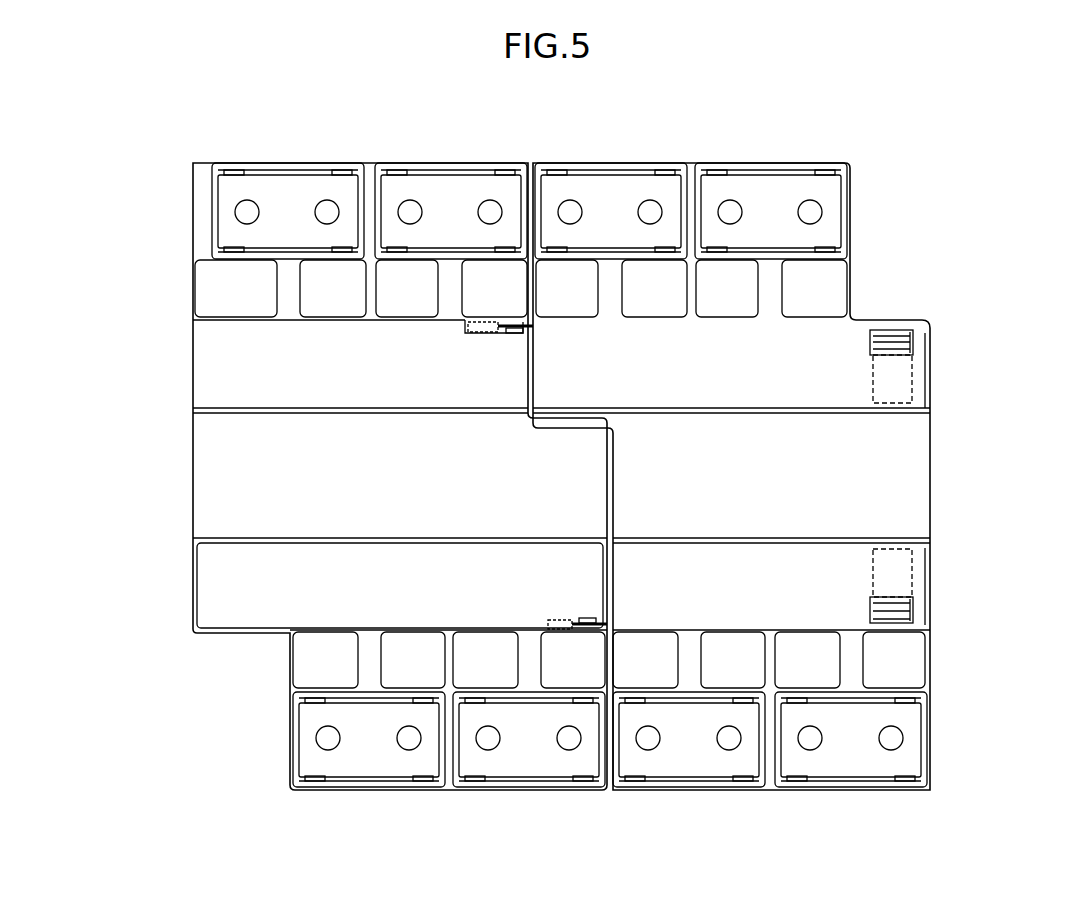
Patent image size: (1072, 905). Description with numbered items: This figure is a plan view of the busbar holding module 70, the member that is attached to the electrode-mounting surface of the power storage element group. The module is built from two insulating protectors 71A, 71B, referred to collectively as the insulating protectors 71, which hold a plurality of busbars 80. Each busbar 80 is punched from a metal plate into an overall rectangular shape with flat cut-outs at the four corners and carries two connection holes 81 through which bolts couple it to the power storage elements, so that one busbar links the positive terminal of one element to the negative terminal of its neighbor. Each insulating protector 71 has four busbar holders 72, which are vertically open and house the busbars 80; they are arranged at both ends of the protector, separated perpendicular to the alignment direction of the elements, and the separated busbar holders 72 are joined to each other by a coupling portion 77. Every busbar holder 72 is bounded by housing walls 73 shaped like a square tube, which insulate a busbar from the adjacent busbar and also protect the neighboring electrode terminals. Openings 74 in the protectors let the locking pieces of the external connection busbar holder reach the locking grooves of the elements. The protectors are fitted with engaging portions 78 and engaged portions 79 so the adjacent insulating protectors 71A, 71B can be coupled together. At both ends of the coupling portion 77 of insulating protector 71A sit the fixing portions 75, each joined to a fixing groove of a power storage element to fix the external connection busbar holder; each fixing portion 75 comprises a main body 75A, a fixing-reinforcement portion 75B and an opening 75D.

The busbar holding module 70 is at (677, 821).
The insulating protector 71 is at (573, 476).
The insulating protector 71A is at (940, 332).
The insulating protector 71B is at (182, 432).
The busbar holder 72 is at (494, 154).
The housing wall 73 is at (371, 185).
The opening 74 is at (838, 282).
The fixing portion 75 is at (922, 372).
The main body 75A is at (900, 390).
The fixing-reinforcement portion 75B is at (932, 327).
The opening 75D is at (912, 336).
The coupling portion 77 is at (212, 515).
The engaging portion 78 is at (510, 330).
The engaged portion 79 is at (476, 335).
The busbar 80 is at (832, 200).
The connection hole 81 is at (818, 211).